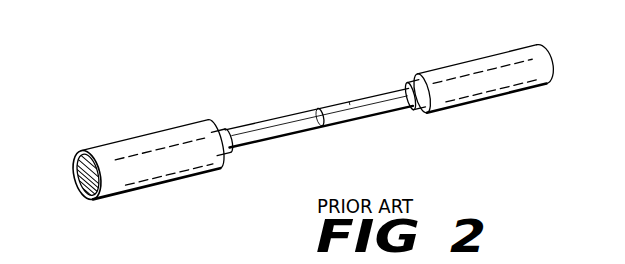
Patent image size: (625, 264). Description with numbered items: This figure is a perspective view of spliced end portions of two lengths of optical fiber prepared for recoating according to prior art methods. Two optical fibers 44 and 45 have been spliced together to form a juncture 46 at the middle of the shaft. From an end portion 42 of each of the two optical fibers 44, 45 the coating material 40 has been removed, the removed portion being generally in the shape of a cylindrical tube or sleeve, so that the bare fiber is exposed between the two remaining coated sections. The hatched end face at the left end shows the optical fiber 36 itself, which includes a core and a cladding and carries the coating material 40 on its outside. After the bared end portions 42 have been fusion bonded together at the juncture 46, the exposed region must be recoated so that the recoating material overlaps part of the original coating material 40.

The optical fiber 36 is at (76, 180).
The coating material 40 is at (75, 160).
The end portion 42 is at (255, 118).
The optical fiber 44 is at (119, 144).
The optical fiber 45 is at (509, 54).
The juncture 46 is at (310, 112).